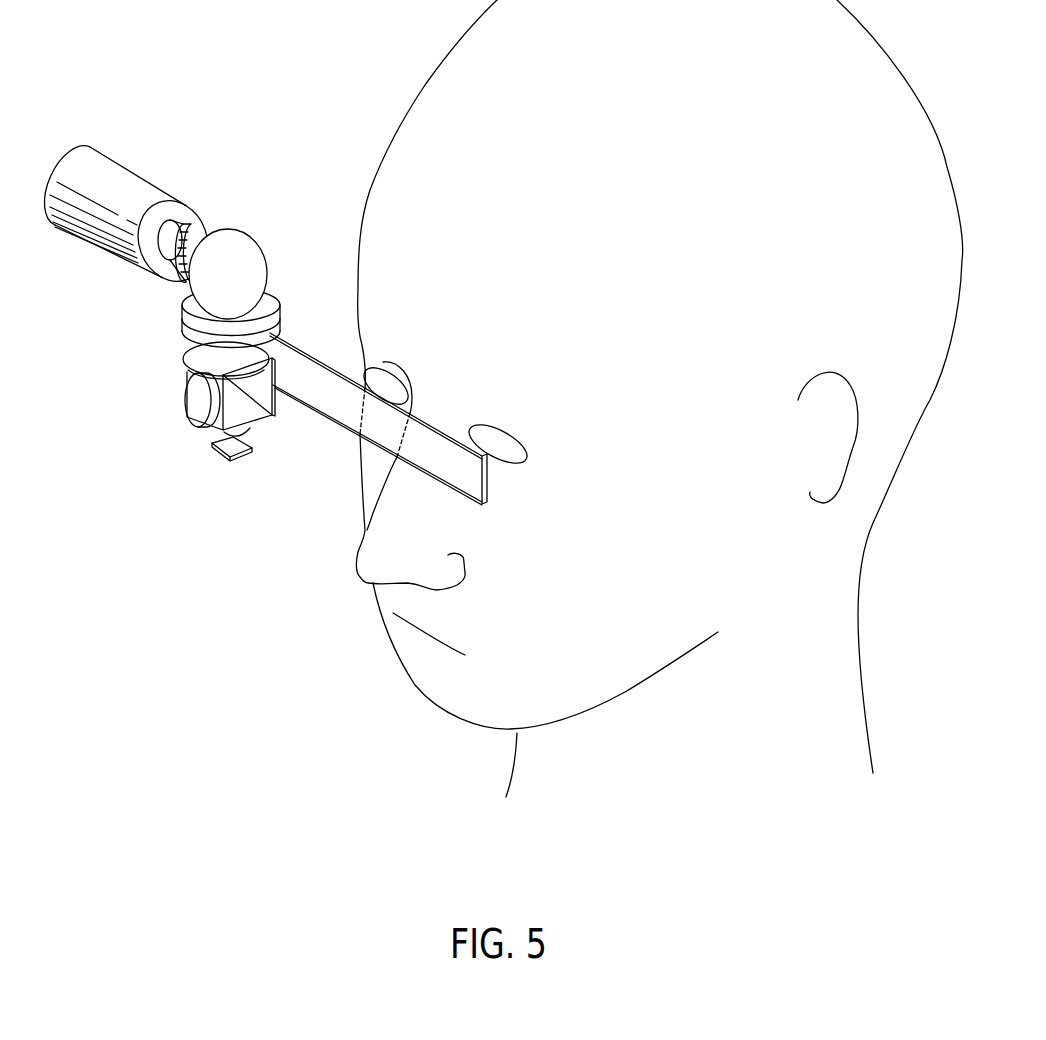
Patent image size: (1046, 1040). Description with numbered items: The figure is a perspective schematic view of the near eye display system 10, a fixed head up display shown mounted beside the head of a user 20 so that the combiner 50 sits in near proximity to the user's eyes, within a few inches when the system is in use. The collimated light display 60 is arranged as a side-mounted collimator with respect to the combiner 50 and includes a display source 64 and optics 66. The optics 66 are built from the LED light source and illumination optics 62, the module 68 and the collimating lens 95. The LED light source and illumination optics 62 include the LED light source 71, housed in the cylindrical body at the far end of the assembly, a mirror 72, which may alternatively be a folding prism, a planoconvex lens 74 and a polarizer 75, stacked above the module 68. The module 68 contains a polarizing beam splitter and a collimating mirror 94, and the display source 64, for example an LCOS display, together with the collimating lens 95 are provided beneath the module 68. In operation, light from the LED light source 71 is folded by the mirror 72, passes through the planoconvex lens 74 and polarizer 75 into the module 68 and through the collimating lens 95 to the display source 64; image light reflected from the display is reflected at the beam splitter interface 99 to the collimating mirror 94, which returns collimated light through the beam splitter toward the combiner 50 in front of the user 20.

The near eye display system 10 is at (276, 68).
The user 20 is at (587, 88).
The combiner 50 is at (475, 472).
The collimated light display 60 is at (82, 123).
The LED light source and illumination optics 62 is at (191, 163).
The display source 64 is at (220, 452).
The optics 66 is at (287, 270).
The module 68 is at (257, 414).
The LED light source 71 is at (103, 246).
The mirror 72 is at (242, 252).
The planoconvex lens 74 is at (283, 313).
The polarizer 75 is at (190, 352).
The collimating mirror 94 is at (190, 403).
The collimating lens 95 is at (244, 432).
The beam splitter interface 99 is at (263, 404).